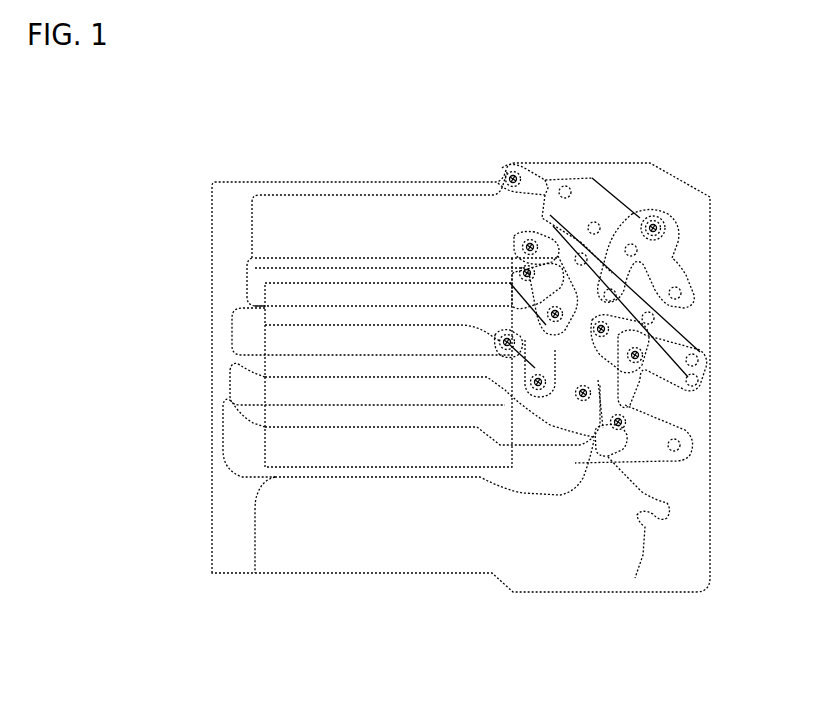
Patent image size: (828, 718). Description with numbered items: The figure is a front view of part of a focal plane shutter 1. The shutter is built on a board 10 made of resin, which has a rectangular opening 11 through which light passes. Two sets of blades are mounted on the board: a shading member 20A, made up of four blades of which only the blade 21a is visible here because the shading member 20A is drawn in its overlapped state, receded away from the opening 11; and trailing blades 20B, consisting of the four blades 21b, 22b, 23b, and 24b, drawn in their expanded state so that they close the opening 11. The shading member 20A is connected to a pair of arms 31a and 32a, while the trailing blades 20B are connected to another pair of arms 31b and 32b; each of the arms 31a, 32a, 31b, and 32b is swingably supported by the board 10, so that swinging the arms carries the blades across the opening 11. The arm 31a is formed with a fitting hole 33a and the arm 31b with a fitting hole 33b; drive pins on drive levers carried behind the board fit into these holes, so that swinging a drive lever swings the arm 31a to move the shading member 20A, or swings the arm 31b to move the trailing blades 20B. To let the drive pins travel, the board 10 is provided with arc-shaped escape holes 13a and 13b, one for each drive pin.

The focal plane shutter 1 is at (694, 156).
The board 10 is at (290, 576).
The opening 11 is at (255, 574).
The escape hole 13a is at (636, 216).
The escape hole 13b is at (635, 578).
The shading member 20A is at (337, 195).
The trailing blades 20B is at (244, 475).
The blade 21a is at (297, 212).
The blade 21b is at (247, 291).
The blade 22b is at (240, 339).
The blade 23b is at (250, 388).
The blade 24b is at (237, 440).
The arm 31a is at (684, 268).
The arm 31b is at (647, 443).
The arm 32a is at (672, 330).
The arm 32b is at (697, 394).
The fitting hole 33a is at (678, 258).
The fitting hole 33b is at (612, 430).